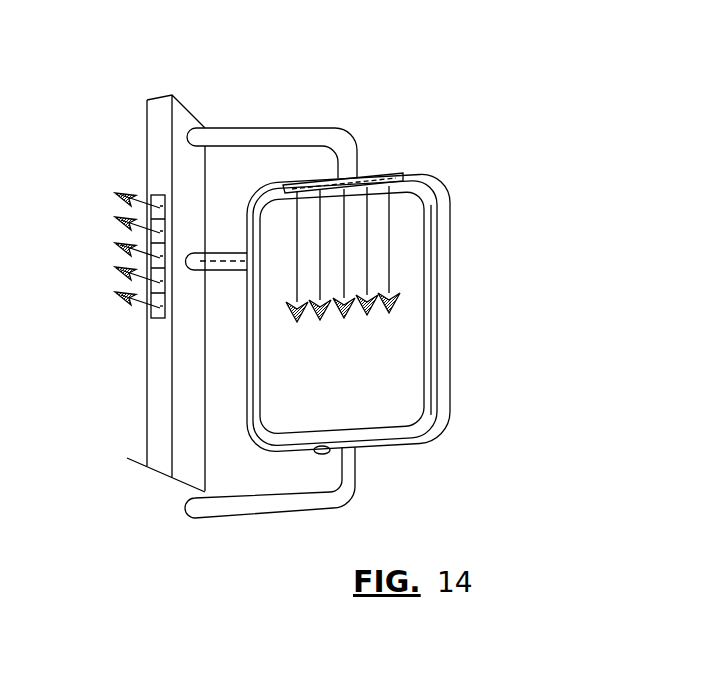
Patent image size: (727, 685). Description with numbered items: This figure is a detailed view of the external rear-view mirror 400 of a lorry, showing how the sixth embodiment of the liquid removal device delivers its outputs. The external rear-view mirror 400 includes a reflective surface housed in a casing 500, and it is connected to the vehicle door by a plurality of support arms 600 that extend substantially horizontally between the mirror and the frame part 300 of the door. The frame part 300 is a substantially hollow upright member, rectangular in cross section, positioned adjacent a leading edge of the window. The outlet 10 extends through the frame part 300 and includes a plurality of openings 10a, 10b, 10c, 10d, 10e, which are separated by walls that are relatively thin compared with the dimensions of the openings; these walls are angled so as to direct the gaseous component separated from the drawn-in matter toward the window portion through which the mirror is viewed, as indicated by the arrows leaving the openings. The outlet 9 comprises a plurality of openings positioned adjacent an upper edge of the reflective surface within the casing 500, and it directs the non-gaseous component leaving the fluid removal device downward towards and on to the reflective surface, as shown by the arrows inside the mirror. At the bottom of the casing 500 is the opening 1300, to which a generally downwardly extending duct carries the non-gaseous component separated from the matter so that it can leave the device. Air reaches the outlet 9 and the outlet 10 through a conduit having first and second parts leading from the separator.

The frame part 300 is at (187, 168).
The outlet 10 is at (162, 225).
The opening 10a is at (157, 187).
The opening 10b is at (157, 234).
The opening 10c is at (157, 272).
The opening 10d is at (160, 295).
The opening 10e is at (152, 315).
The support arms 600 is at (340, 127).
The casing 500 is at (450, 352).
The external rear-view mirror 400 is at (407, 243).
The outlet 9 is at (370, 180).
The opening 1300 is at (320, 455).